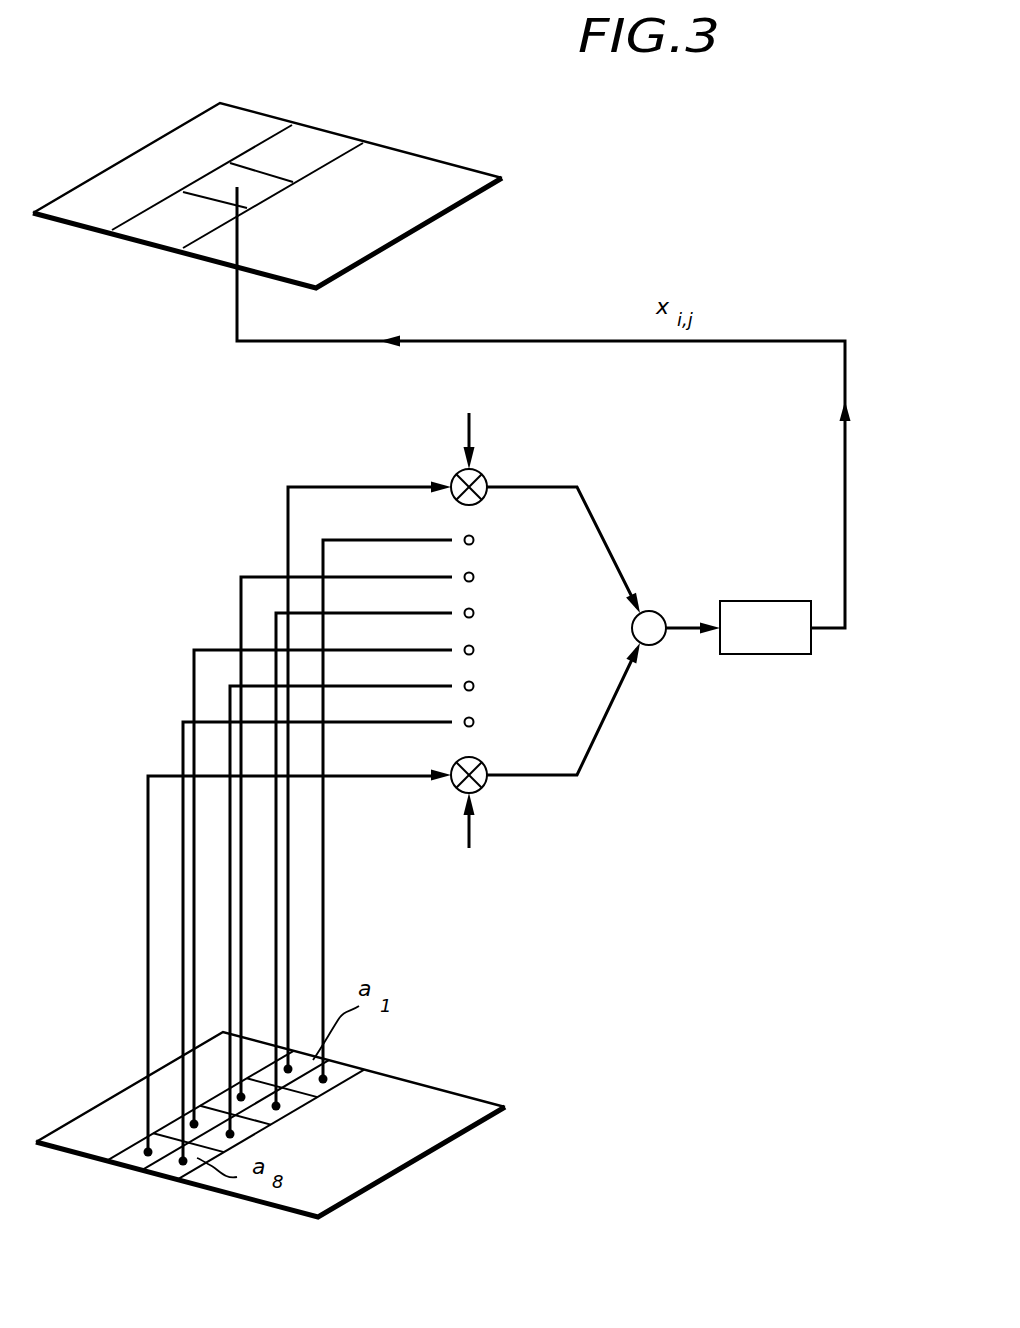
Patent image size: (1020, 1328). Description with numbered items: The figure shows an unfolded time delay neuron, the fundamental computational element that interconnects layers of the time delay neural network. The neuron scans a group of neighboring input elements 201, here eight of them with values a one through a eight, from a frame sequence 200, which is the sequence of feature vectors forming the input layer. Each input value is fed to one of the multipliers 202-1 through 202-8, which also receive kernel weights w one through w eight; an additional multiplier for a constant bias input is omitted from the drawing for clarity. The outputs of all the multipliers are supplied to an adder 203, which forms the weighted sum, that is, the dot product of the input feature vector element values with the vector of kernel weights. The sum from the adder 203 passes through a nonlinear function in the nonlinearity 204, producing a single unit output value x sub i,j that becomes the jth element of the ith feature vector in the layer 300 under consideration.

The layer 300 is at (100, 172).
The frame sequence 200 is at (413, 1165).
The neighboring input elements 201 is at (157, 1177).
The multiplier 202-1 is at (481, 471).
The multiplier 202-8 is at (483, 790).
The adder 203 is at (655, 645).
The nonlinearity 204 is at (785, 654).